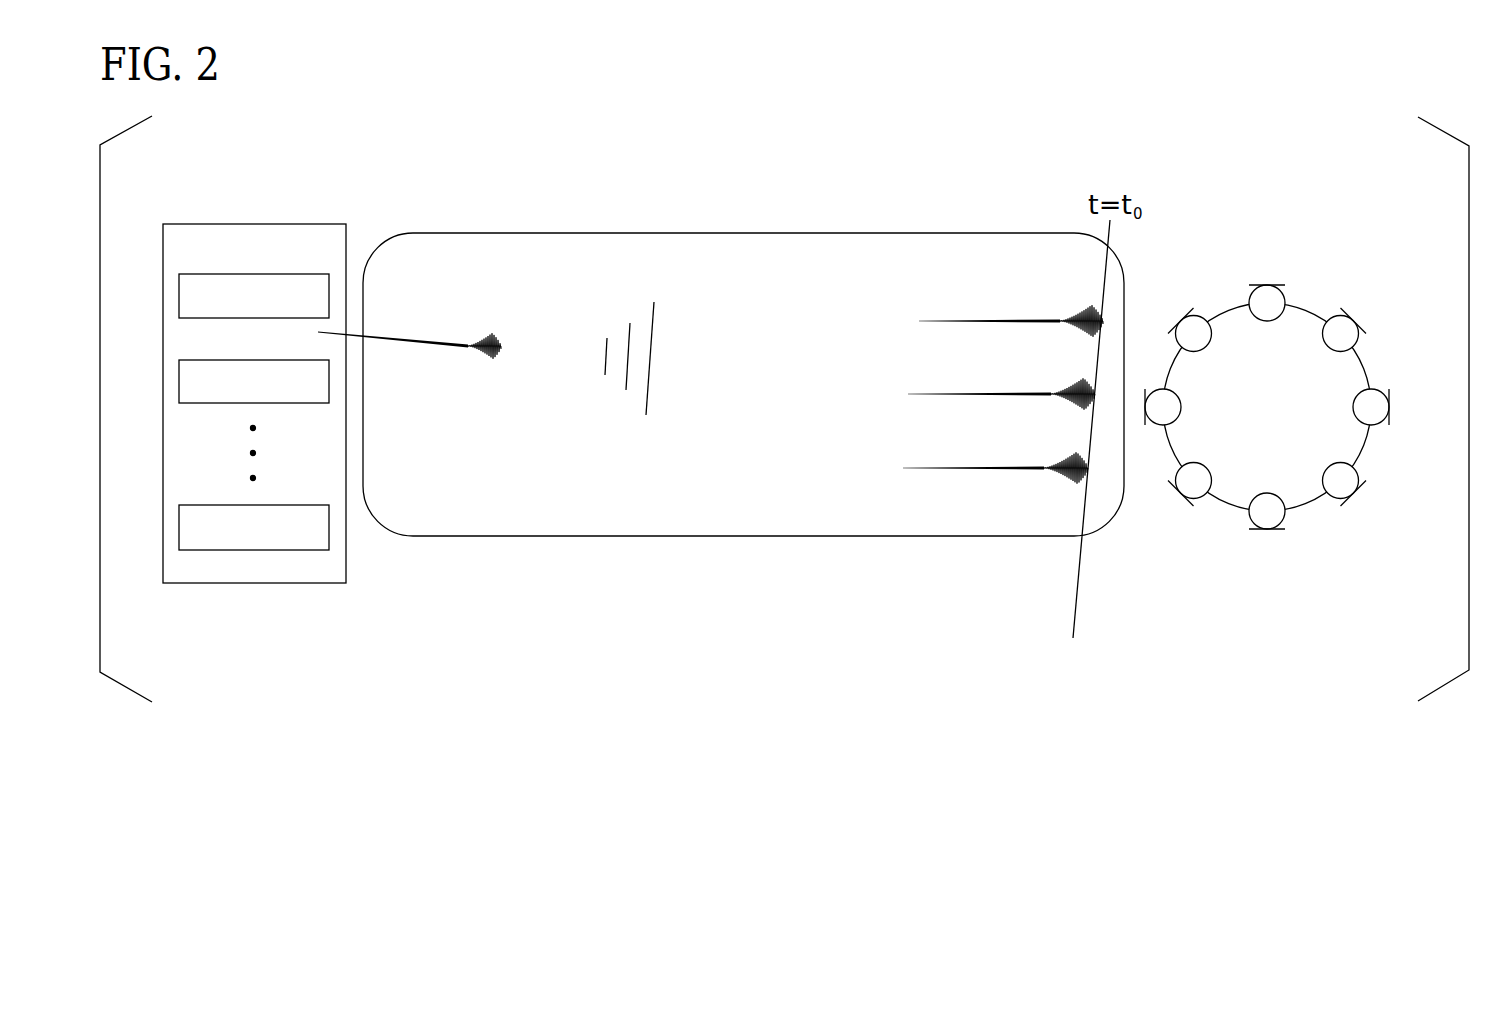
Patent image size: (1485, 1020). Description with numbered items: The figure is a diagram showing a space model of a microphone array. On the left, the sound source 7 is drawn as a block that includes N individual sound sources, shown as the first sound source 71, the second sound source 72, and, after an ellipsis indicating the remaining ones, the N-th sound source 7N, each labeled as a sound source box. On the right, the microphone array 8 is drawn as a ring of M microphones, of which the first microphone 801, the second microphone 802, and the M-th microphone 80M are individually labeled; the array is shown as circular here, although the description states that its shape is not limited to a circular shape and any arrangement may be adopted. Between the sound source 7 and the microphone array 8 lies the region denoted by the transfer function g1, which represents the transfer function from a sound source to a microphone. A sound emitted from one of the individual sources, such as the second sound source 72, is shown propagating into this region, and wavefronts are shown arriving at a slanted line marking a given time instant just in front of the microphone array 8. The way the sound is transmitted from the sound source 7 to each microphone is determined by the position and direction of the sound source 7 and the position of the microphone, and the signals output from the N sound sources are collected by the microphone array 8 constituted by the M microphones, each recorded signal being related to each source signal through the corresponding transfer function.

The sound source 7 is at (272, 222).
The first sound source 71 is at (260, 273).
The second sound source 72 is at (260, 359).
The N-th sound source 7N is at (260, 504).
The transfer function g1 is at (749, 227).
The microphone array 8 is at (1288, 368).
The first microphone 801 is at (1390, 403).
The second microphone 802 is at (1363, 313).
The M-th microphone 80M is at (1351, 520).